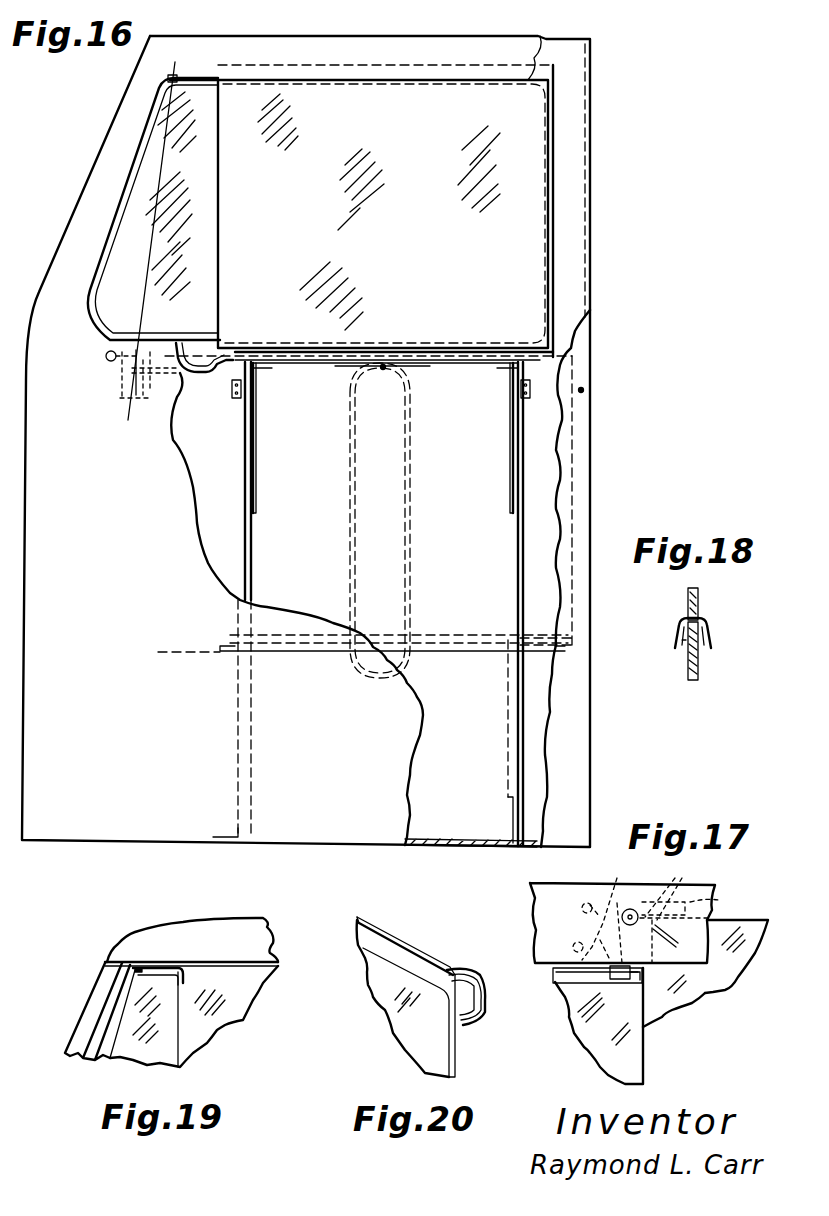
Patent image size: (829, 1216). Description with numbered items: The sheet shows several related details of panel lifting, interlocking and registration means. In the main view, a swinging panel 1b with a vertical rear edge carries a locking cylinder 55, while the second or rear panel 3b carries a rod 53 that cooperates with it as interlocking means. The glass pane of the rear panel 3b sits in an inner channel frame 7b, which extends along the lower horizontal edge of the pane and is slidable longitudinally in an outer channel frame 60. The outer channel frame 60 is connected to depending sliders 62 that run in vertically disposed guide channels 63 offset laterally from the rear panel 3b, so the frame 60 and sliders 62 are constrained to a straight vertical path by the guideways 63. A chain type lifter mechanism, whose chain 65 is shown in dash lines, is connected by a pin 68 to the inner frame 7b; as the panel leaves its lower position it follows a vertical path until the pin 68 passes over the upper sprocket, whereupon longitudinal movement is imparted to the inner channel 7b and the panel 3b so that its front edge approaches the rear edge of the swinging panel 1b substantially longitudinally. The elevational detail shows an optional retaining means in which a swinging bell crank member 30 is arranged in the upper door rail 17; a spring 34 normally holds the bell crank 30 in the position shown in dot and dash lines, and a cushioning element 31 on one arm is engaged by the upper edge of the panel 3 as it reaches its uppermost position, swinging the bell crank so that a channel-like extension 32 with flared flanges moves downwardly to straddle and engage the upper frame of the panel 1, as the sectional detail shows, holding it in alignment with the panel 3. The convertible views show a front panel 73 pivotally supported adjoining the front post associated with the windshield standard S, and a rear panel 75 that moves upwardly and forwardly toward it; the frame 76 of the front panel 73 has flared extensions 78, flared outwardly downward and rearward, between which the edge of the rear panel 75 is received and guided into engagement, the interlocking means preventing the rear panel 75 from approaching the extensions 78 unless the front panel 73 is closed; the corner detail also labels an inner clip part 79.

In FIG. 16, the swinging panel 1b is at (140, 192).
In FIG. 16, the second or rear panel 3b is at (535, 185).
In FIG. 16, the locking cylinder 55 is at (118, 396).
In FIG. 16, the rod 53 is at (180, 376).
In FIG. 16, the inner channel frame 7b is at (535, 660).
In FIG. 16, the outer channel frame 60 is at (332, 363).
In FIG. 16, the pin 68 is at (386, 368).
In FIG. 16, the sliders 62 is at (254, 485).
In FIG. 16, the guide channels 63 is at (247, 572).
In FIG. 16, the chain 65 is at (417, 558).
In FIG. 18, the bell crank member 30 is at (698, 610).
In FIG. 17, the bell crank member 30 is at (660, 910).
In FIG. 18, the channel-like extension 32 is at (708, 633).
In FIG. 17, the channel-like extension 32 is at (620, 981).
In FIG. 18, the panel 1 is at (699, 662).
In FIG. 17, the panel 1 is at (645, 1030).
In FIG. 17, the upper door rail 17 is at (572, 876).
In FIG. 17, the spring 34 is at (601, 910).
In FIG. 17, the cushioning element 31 is at (694, 901).
In FIG. 17, the panel 3 is at (708, 987).
In FIG. 19, the frame 76 is at (150, 972).
In FIG. 20, the frame 76 is at (415, 940).
In FIG. 19, the windshield standard S is at (95, 994).
In FIG. 19, the rear panel 75 is at (227, 1025).
In FIG. 19, the front panel 73 is at (127, 1052).
In FIG. 20, the front panel 73 is at (385, 1018).
In FIG. 20, the flared extensions 78 is at (482, 983).
In FIG. 20, the clip inner 79 is at (470, 1020).